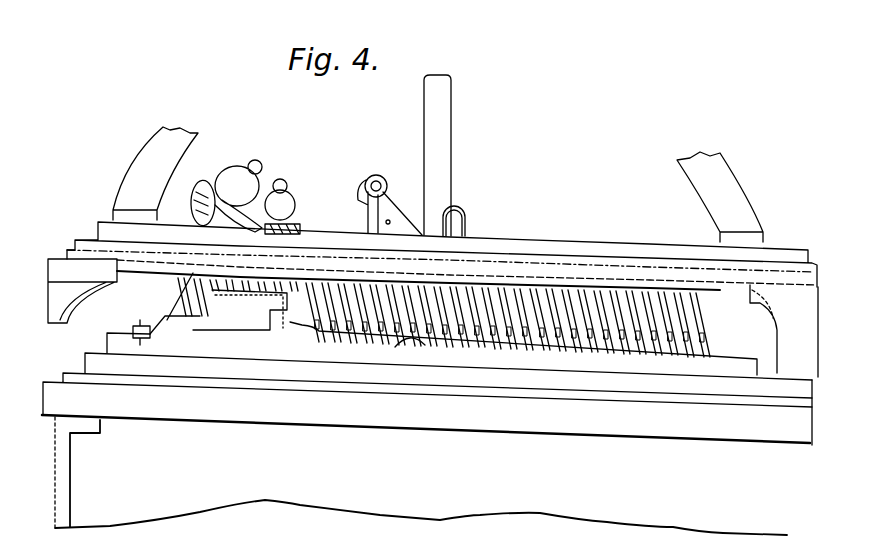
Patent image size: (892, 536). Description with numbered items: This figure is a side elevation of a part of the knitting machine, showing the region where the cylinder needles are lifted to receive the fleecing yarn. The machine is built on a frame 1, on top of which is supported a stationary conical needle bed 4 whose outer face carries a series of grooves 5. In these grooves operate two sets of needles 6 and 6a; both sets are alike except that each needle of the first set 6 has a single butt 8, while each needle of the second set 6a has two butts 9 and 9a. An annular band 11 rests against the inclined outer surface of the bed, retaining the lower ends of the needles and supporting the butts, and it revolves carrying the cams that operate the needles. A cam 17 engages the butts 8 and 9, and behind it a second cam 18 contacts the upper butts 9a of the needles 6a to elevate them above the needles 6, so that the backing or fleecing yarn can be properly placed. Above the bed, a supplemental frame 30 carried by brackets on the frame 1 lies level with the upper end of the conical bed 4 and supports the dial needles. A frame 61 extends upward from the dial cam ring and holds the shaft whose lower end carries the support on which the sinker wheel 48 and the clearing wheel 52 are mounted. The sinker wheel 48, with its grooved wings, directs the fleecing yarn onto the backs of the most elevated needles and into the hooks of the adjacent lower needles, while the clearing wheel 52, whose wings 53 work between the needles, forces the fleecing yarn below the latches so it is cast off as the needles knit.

The frame 1 is at (421, 476).
The conical needle bed 4 is at (568, 199).
The grooves 5 is at (498, 264).
The needles 6 is at (460, 263).
The needles 6a is at (433, 262).
The single butt 8 is at (467, 345).
The butt 9 is at (412, 322).
The upper butt 9a is at (393, 332).
The annular band 11 is at (730, 358).
The cam 17 is at (413, 337).
The second cam 18 is at (283, 320).
The supplemental frame 30 is at (70, 247).
The sinker wheel 48 is at (367, 205).
The clearing wheel 52 is at (197, 192).
The wings 53 is at (233, 174).
The frame 61 is at (438, 184).